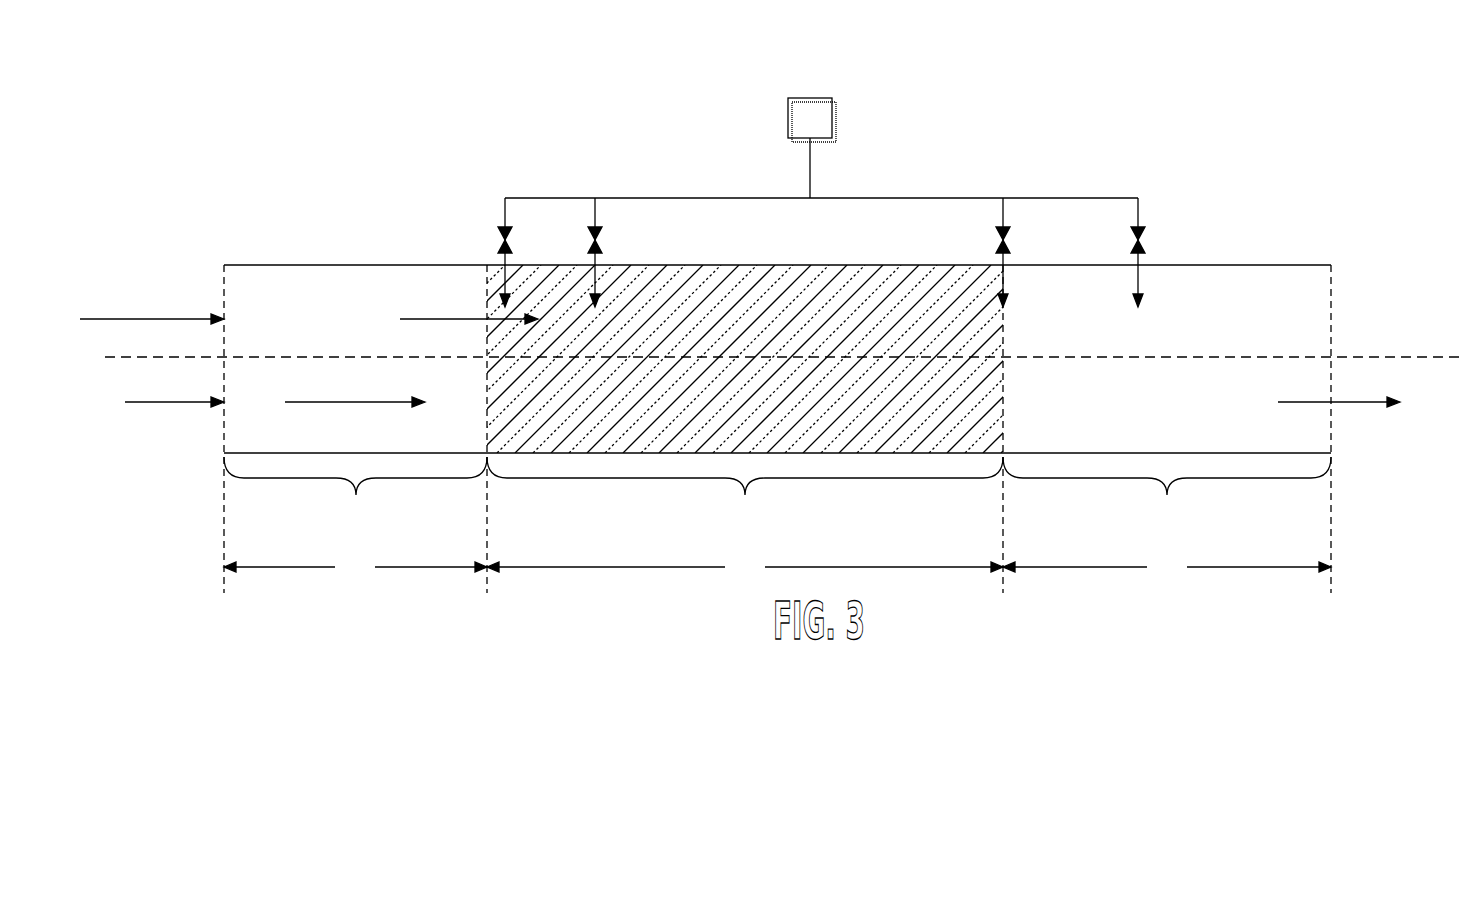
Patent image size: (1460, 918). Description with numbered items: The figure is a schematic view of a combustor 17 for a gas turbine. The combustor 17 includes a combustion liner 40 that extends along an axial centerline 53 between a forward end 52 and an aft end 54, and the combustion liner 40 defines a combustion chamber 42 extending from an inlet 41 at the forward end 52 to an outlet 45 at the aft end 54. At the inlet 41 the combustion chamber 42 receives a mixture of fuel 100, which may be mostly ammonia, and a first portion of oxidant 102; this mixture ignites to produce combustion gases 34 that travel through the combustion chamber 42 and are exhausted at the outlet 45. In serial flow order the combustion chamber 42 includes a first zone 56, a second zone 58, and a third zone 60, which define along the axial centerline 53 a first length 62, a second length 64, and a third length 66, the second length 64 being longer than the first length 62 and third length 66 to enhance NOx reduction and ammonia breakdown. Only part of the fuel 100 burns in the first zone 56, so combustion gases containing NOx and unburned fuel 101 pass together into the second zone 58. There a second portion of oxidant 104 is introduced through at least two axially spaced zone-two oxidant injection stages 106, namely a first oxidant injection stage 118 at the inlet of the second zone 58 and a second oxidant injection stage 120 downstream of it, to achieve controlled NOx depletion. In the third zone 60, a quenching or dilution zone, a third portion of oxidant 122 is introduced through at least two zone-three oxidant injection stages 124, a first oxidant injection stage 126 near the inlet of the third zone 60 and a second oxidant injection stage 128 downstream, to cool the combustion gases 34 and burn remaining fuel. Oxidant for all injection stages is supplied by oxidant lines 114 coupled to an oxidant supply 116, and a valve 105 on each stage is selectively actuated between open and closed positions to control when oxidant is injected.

The combustor 17 is at (1225, 96).
The combustion gases 34 is at (345, 402).
The combustion liner 40 is at (365, 265).
The inlet 41 is at (210, 428).
The combustion chamber 42 is at (324, 292).
The outlet 45 is at (1345, 295).
The forward end 52 is at (186, 207).
The axial centerline 53 is at (1408, 357).
The aft end 54 is at (1316, 186).
The first zone 56 is at (355, 495).
The second zone 58 is at (744, 399).
The third zone 60 is at (1167, 495).
The first length 62 is at (355, 567).
The second length 64 is at (745, 567).
The third length 66 is at (1167, 567).
The fuel 100 is at (158, 319).
The unburned fuel 101 is at (432, 319).
The first portion of oxidant 102 is at (138, 402).
The second portion of oxidant 104 is at (612, 172).
The valve 105 is at (503, 215).
The zone-two oxidant injection stages 106 is at (478, 160).
The oxidant line 114 is at (900, 198).
The oxidant supply 116 is at (812, 148).
The first oxidant injection stage 118 is at (503, 280).
The second oxidant injection stage 120 is at (593, 280).
The third portion of oxidant 122 is at (1130, 147).
The zone-three oxidant injection stages 124 is at (998, 138).
The first oxidant injection stage 126 is at (1005, 215).
The second oxidant injection stage 128 is at (1136, 280).